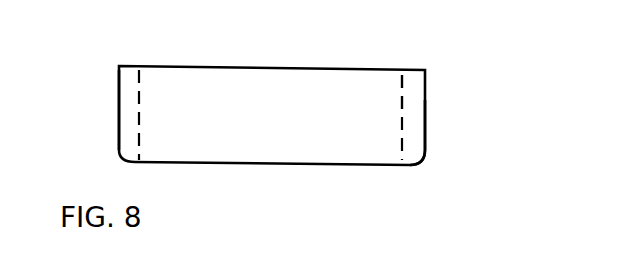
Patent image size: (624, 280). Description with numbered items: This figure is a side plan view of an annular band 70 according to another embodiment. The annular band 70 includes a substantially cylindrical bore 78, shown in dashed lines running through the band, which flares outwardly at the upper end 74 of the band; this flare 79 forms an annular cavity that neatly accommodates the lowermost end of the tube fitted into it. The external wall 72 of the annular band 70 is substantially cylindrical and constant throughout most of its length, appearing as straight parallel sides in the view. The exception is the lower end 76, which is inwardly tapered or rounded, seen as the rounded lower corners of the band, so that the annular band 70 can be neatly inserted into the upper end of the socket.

The annular band 70 is at (458, 74).
The external wall 72 is at (117, 88).
The upper end 74 is at (140, 66).
The lower end 76 is at (418, 177).
The cylindrical bore 78 is at (398, 117).
The flare 79 is at (403, 78).